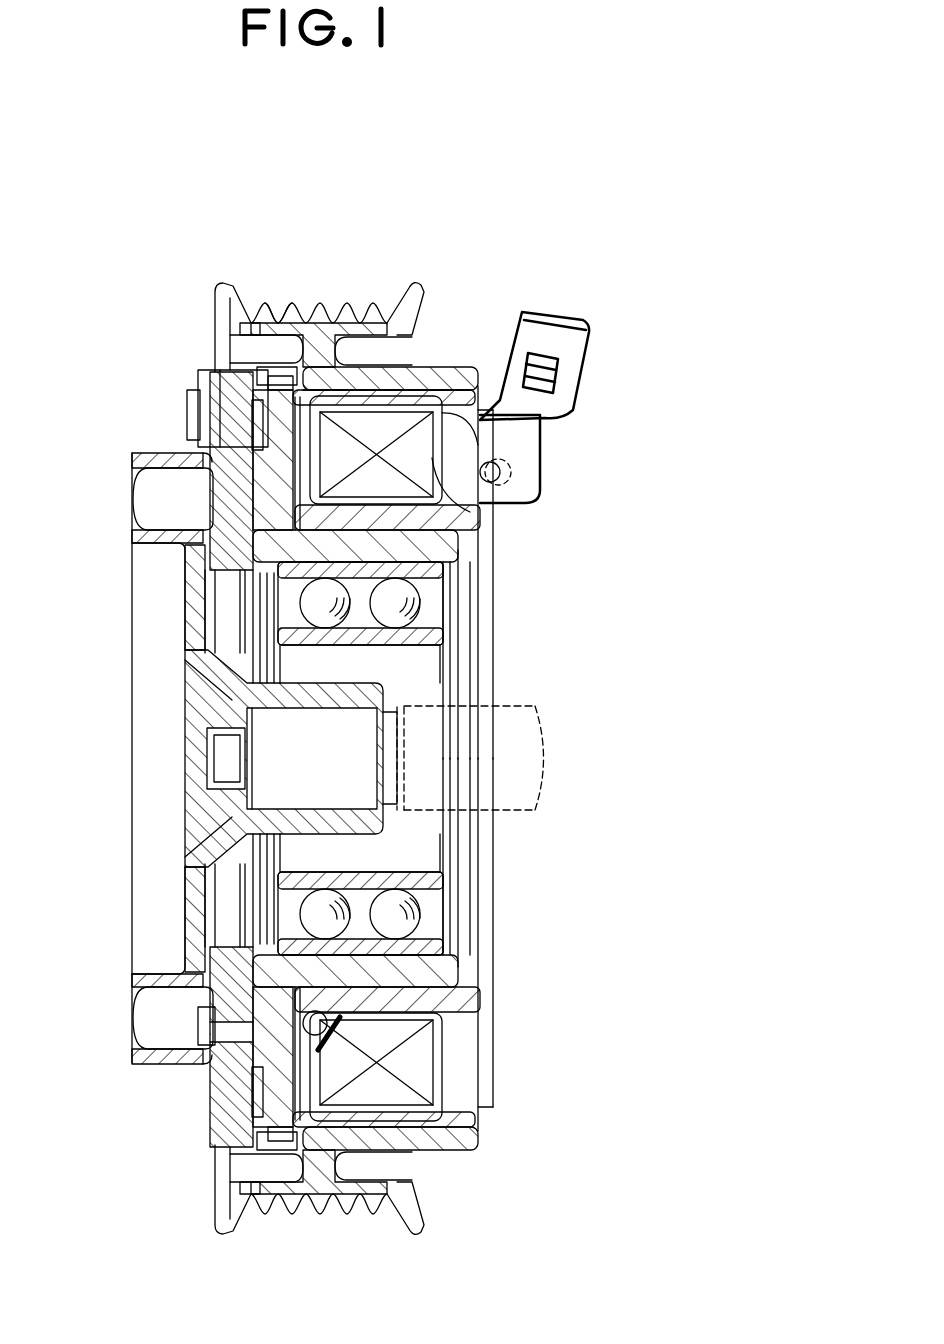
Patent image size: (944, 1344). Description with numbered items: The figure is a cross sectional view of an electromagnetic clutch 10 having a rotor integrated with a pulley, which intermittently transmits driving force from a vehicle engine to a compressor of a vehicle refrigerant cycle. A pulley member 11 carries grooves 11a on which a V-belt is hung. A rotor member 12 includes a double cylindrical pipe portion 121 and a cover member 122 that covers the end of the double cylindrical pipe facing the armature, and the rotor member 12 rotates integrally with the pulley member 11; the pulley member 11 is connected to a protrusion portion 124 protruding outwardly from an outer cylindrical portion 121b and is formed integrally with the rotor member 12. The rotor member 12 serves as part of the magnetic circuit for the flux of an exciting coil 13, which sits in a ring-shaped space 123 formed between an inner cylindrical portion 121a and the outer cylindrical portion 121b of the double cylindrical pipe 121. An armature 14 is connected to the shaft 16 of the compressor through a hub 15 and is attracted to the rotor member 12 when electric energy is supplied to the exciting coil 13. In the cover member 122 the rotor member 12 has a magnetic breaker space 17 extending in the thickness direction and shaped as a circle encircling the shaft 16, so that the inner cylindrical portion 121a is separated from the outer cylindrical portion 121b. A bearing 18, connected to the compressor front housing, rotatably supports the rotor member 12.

The electromagnetic clutch 10 is at (520, 218).
The pulley member 11 is at (212, 276).
The grooves 11a is at (270, 305).
The rotor member 12 is at (447, 361).
The exciting coil 13 is at (412, 445).
The armature 14 is at (230, 527).
The hub 15 is at (132, 612).
The shaft 16 is at (520, 703).
The magnetic breaker space 17 is at (290, 423).
The bearing 18 is at (432, 637).
The double cylindrical pipe portion 121 is at (468, 368).
The inner cylindrical portion 121a is at (413, 545).
The outer cylindrical portion 121b is at (408, 370).
The cover member 122 is at (235, 452).
The ring-shaped space 123 is at (248, 360).
The protrusion portion 124 is at (258, 330).